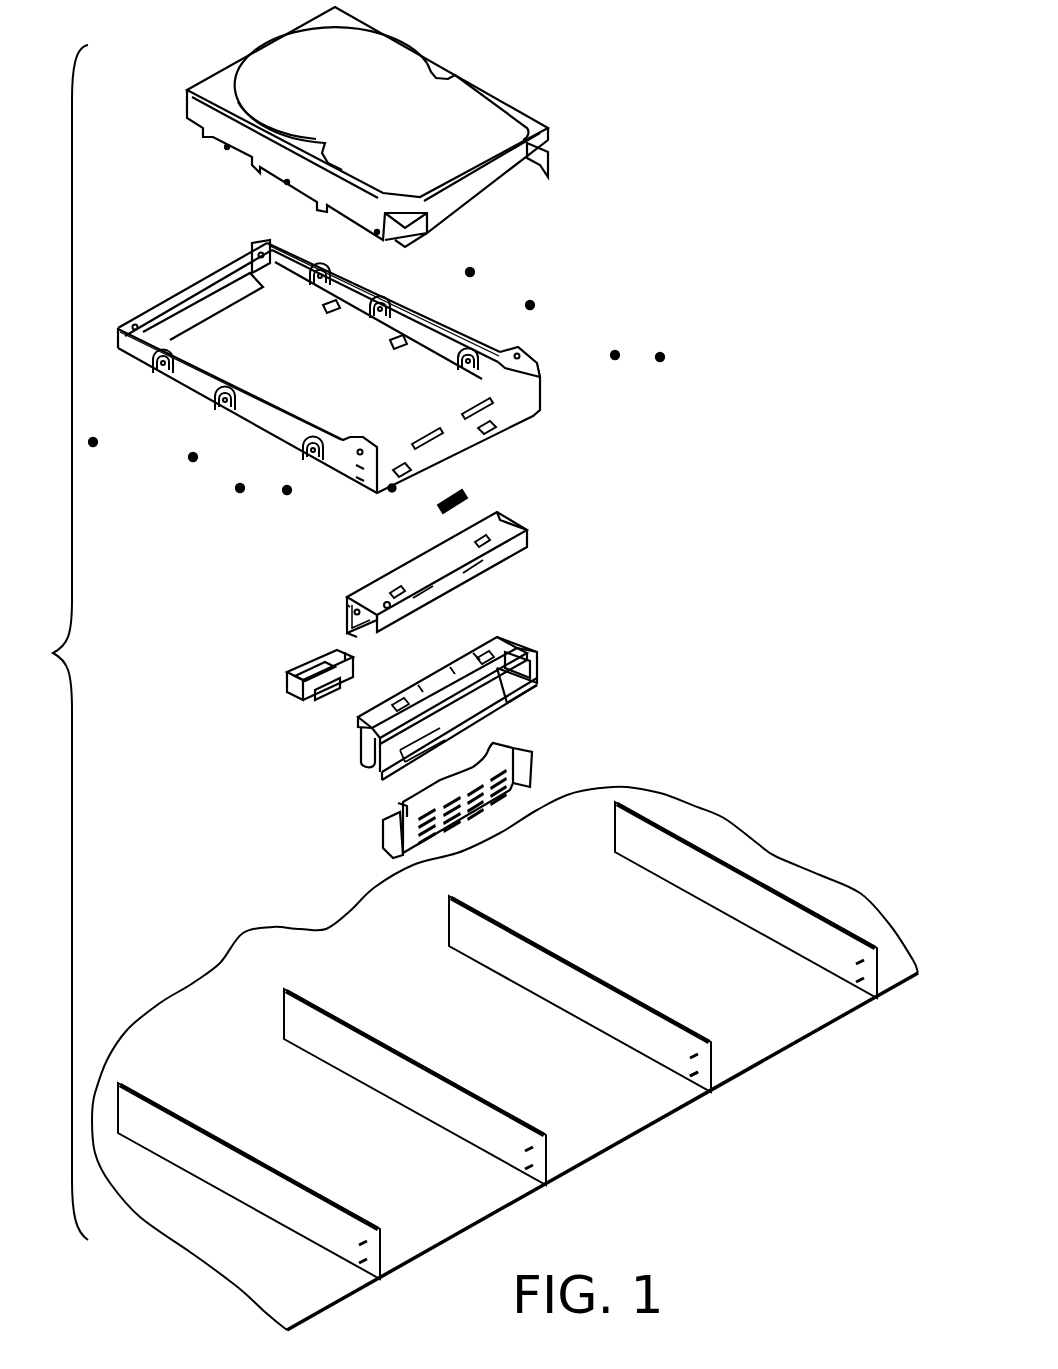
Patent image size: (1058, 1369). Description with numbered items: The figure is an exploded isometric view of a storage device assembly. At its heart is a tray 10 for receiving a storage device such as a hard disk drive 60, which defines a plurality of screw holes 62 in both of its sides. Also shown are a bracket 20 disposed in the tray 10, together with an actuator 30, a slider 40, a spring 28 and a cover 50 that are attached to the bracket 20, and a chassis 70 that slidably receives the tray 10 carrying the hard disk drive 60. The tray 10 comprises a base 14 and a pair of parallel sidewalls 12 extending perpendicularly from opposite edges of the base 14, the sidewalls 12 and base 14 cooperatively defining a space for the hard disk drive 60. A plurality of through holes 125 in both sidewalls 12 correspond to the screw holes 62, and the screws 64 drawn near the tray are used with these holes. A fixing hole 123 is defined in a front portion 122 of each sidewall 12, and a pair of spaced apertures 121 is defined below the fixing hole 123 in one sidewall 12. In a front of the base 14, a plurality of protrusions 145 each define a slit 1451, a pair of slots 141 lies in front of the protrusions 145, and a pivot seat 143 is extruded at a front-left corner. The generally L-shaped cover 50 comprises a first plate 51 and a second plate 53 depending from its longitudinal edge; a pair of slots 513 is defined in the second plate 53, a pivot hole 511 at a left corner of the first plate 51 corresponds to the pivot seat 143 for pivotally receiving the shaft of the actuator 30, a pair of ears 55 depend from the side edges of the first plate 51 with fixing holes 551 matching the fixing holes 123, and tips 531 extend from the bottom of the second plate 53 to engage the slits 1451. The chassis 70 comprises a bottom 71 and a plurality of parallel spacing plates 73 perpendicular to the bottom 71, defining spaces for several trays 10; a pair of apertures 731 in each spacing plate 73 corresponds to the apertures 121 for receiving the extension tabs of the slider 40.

The tray 10 is at (351, 396).
The sidewalls 12 is at (260, 412).
The base 14 is at (413, 360).
The bracket 20 is at (537, 673).
The spring 28 is at (467, 497).
The actuator 30 is at (397, 837).
The slider 40 is at (300, 702).
The cover 50 is at (434, 592).
The first plate 51 is at (440, 570).
The second plate 53 is at (345, 625).
The ears 55 is at (350, 615).
The hard disk drive 60 is at (457, 100).
The screw holes 62 is at (222, 148).
The screws 64 is at (95, 443).
The chassis 70 is at (505, 1050).
The bottom 71 is at (793, 875).
The spacing plates 73 is at (697, 1054).
The apertures 121 is at (358, 460).
The front portion 122 is at (537, 377).
The fixing hole 123 is at (520, 355).
The through holes 125 is at (160, 363).
The slots 141 is at (487, 428).
The pivot seat 143 is at (387, 497).
The protrusions 145 is at (440, 437).
The pivot hole 511 is at (390, 607).
The slots 513 is at (483, 538).
The tips 531 is at (357, 637).
The fixing holes 551 is at (345, 615).
The apertures 731 is at (695, 1077).
The slit 1451 is at (527, 423).